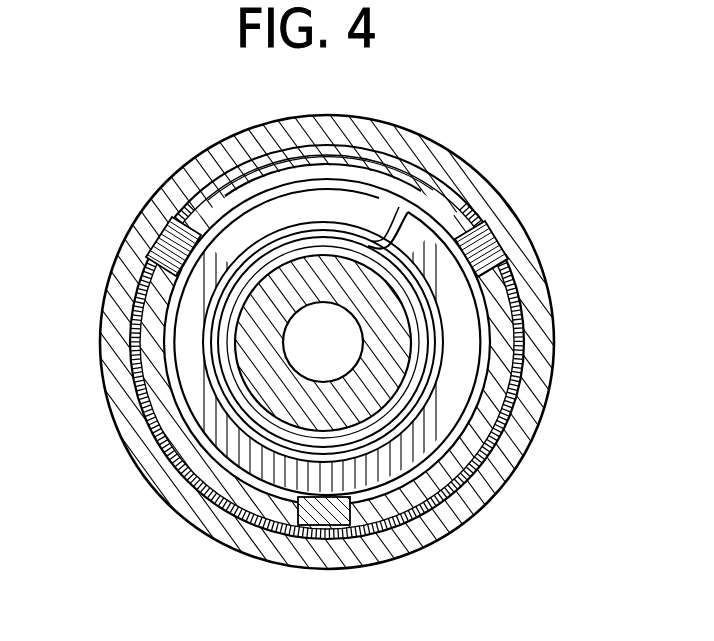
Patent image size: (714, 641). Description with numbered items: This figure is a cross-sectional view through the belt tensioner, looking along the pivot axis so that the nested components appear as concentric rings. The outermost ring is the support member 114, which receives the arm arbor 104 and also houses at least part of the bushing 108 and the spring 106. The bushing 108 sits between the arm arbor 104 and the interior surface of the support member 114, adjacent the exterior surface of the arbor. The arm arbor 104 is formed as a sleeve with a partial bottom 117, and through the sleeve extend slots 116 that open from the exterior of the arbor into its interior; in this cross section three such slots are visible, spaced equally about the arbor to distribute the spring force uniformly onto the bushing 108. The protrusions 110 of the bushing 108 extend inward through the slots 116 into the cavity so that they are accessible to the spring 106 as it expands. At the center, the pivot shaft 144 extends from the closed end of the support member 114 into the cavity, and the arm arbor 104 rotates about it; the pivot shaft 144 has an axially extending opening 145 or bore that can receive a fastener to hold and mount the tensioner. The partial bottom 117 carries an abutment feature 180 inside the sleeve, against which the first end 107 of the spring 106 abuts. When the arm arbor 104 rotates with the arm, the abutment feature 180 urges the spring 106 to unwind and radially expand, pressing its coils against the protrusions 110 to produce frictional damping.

The arm arbor 104 is at (508, 484).
The spring 106 is at (283, 205).
The first end of the spring 107 is at (403, 165).
The bushing 108 is at (522, 338).
The protrusions 110 is at (167, 246).
The support member 114 is at (552, 372).
The slots 116 is at (182, 212).
The partial bottom 117 is at (510, 292).
The pivot shaft 144 is at (262, 368).
The axially extending opening 145 is at (323, 303).
The abutment feature 180 is at (417, 200).